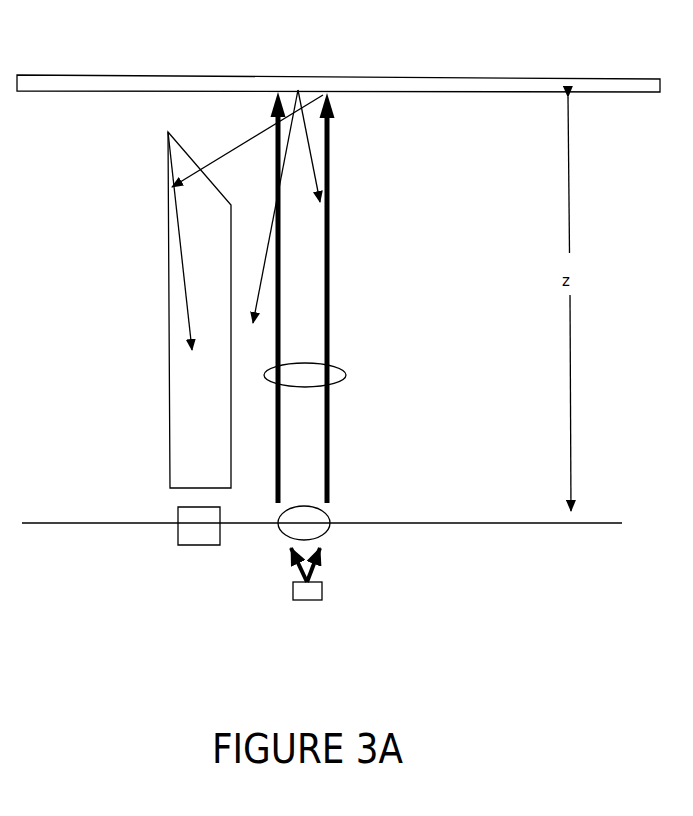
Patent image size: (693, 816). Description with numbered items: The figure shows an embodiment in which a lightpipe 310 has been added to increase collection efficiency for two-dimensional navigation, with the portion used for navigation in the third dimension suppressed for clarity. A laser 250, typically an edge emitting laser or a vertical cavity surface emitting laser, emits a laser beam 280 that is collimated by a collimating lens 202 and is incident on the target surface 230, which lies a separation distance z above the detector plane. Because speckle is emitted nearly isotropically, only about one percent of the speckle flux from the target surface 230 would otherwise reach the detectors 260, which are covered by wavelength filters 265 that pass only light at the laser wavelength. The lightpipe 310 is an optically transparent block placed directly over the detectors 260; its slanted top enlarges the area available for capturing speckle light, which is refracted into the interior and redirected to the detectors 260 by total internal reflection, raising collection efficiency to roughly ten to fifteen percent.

The target surface 230 is at (630, 79).
The lightpipe 310 is at (180, 382).
The laser beam 280 is at (346, 375).
The collimating lens 202 is at (315, 515).
The wavelength filters 265 is at (190, 513).
The detectors 260 is at (202, 535).
The laser 250 is at (322, 588).